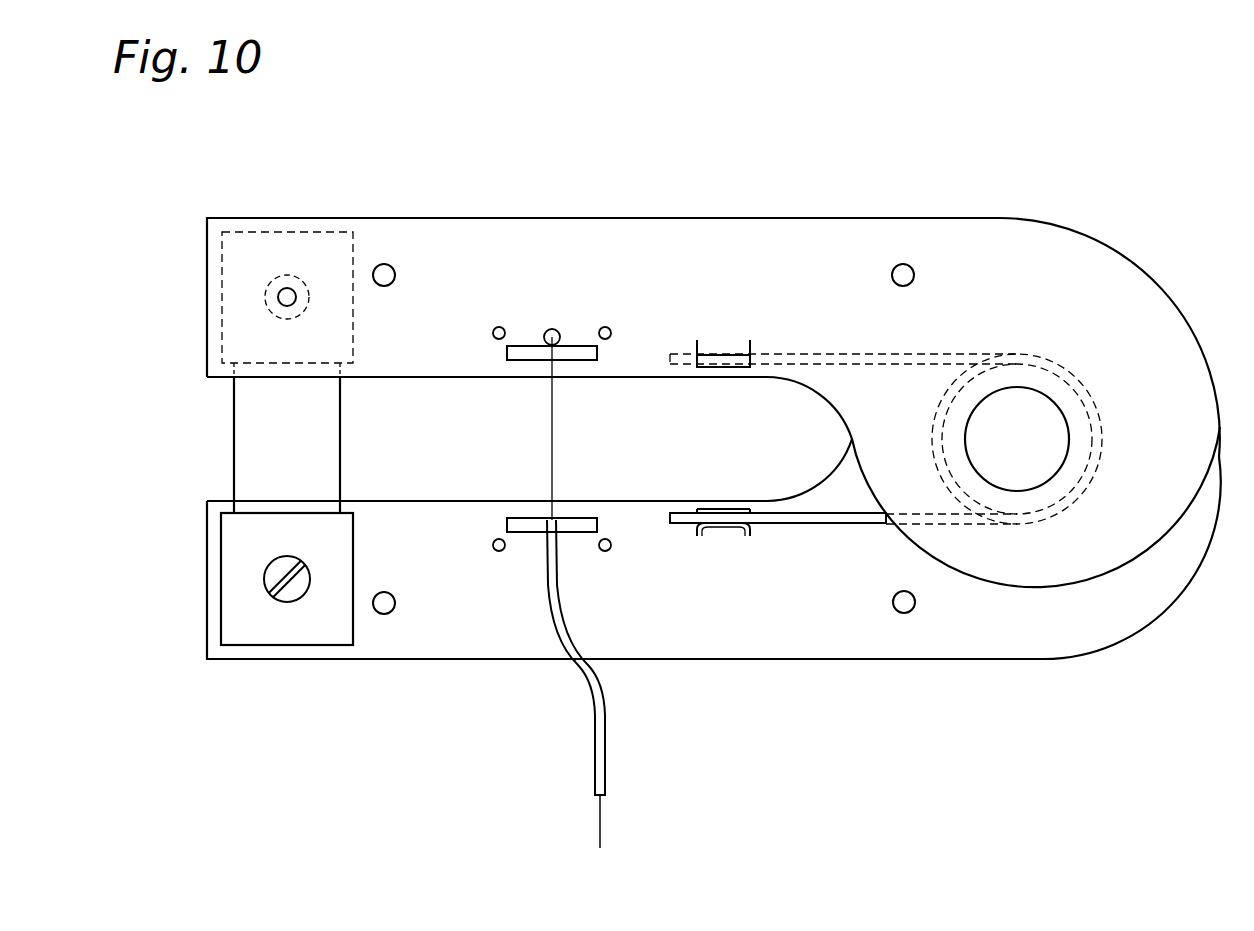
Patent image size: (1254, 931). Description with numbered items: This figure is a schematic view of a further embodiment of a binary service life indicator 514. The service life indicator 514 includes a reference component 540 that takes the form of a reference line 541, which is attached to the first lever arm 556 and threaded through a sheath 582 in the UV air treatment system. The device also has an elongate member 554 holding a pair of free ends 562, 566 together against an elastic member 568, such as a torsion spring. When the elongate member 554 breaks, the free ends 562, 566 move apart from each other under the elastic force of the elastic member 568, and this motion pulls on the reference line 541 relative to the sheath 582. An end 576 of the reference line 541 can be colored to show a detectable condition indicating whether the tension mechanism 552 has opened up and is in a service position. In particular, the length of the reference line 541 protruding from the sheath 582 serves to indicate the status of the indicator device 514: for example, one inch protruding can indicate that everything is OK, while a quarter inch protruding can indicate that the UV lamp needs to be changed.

The service life indicator 514 is at (962, 128).
The first lever arm 556 is at (748, 217).
The tension mechanism 552 is at (1062, 700).
The free end 562 is at (240, 217).
The elongate member 554 is at (235, 410).
The free end 566 is at (222, 660).
The reference line 541 is at (552, 452).
The elastic member 568 is at (836, 523).
The sheath 582 is at (607, 752).
The end of the reference line 576 is at (603, 832).
The reference component 540 is at (560, 728).